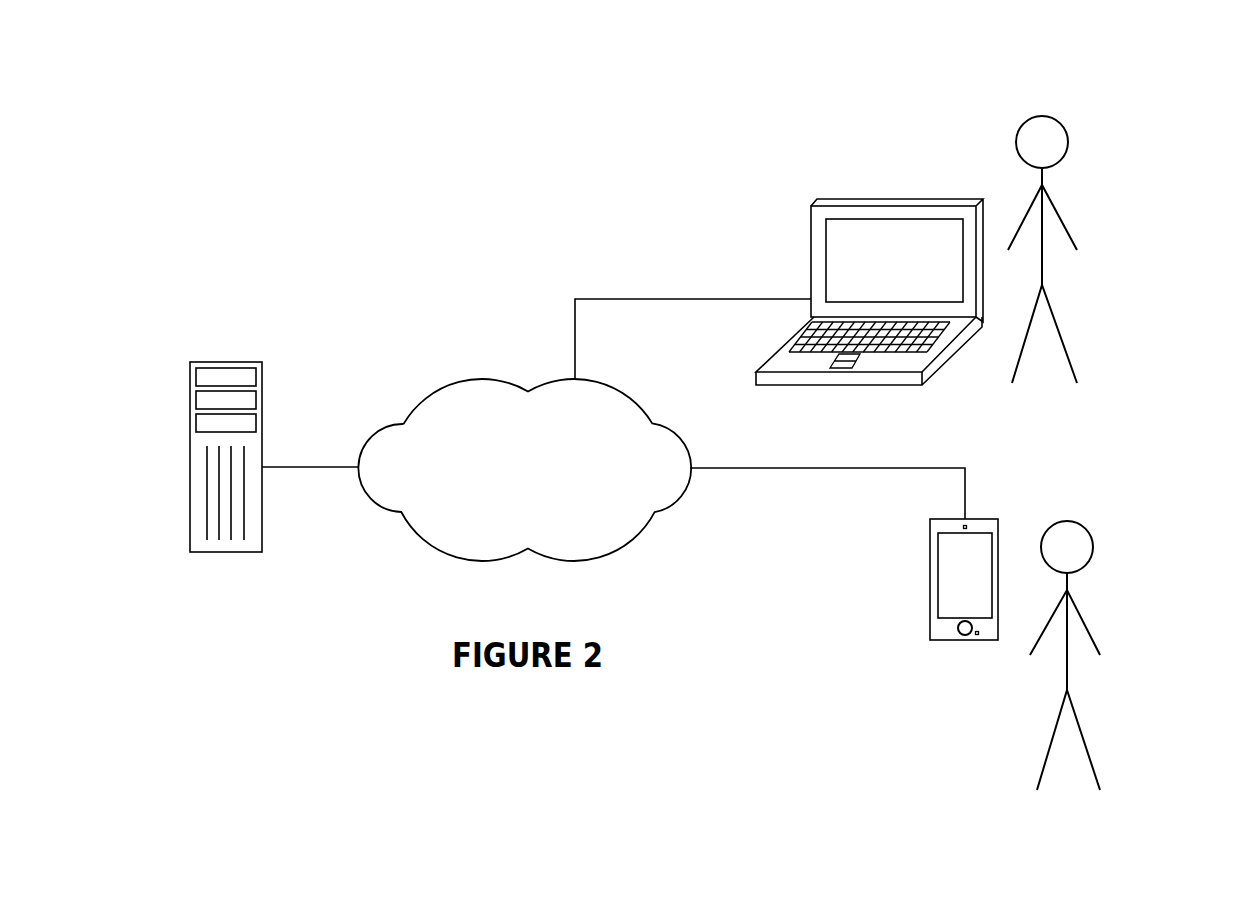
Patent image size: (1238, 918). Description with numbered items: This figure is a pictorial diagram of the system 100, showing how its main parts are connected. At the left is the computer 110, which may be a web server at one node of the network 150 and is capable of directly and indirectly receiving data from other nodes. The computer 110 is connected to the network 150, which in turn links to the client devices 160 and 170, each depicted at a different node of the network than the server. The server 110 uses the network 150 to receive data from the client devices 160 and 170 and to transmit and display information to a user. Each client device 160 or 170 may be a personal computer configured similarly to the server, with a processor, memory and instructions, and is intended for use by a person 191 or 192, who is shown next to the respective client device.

The system 100 is at (230, 72).
The computer 110 is at (190, 373).
The network 150 is at (478, 376).
The client device 160 is at (930, 541).
The client device 170 is at (811, 236).
The person 191 is at (1066, 197).
The person 192 is at (1092, 589).